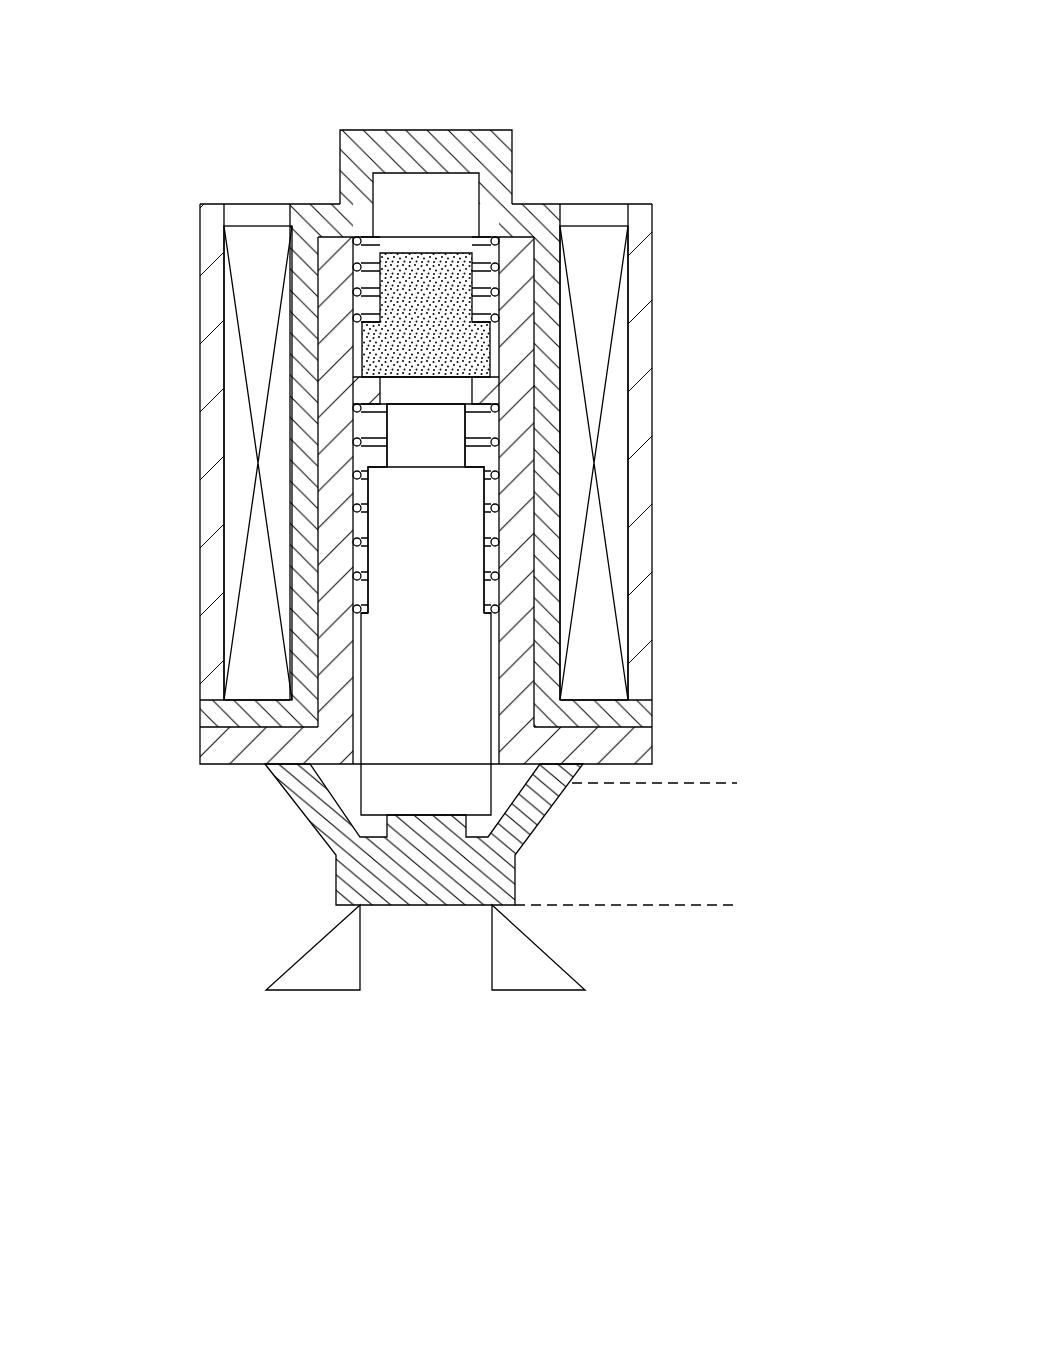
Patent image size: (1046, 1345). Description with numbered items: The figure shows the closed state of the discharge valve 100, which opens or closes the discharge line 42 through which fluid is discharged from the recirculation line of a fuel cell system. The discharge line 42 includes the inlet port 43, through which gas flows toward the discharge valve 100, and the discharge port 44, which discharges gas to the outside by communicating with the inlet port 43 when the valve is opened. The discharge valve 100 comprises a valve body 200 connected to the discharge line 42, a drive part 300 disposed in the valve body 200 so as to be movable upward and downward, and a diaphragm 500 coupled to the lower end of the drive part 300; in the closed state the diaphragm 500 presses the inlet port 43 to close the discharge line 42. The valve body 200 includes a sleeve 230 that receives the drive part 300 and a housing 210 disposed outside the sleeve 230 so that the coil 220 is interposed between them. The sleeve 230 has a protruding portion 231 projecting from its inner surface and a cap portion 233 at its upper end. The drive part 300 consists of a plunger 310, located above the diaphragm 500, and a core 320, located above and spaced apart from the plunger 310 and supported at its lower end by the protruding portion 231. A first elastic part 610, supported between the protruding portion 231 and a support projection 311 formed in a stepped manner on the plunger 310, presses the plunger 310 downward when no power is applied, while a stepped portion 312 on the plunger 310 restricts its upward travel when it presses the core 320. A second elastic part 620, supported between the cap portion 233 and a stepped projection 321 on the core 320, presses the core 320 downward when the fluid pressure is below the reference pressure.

The discharge valve 100 is at (200, 50).
The valve body 200 is at (720, 219).
The housing 210 is at (642, 241).
The coil 220 is at (608, 291).
The sleeve 230 is at (518, 518).
The protruding portion 231 is at (478, 389).
The cap portion 233 is at (468, 130).
The drive part 300 is at (702, 22).
The plunger 310 is at (476, 670).
The support projection 311 is at (483, 600).
The stepped portion 312 is at (470, 464).
The core 320 is at (478, 348).
The stepped projection 321 is at (478, 322).
The diaphragm 500 is at (504, 867).
The first elastic part 610 is at (355, 475).
The second elastic part 620 is at (355, 292).
The discharge line 42 is at (437, 1072).
The inlet port 43 is at (431, 960).
The discharge port 44 is at (710, 815).